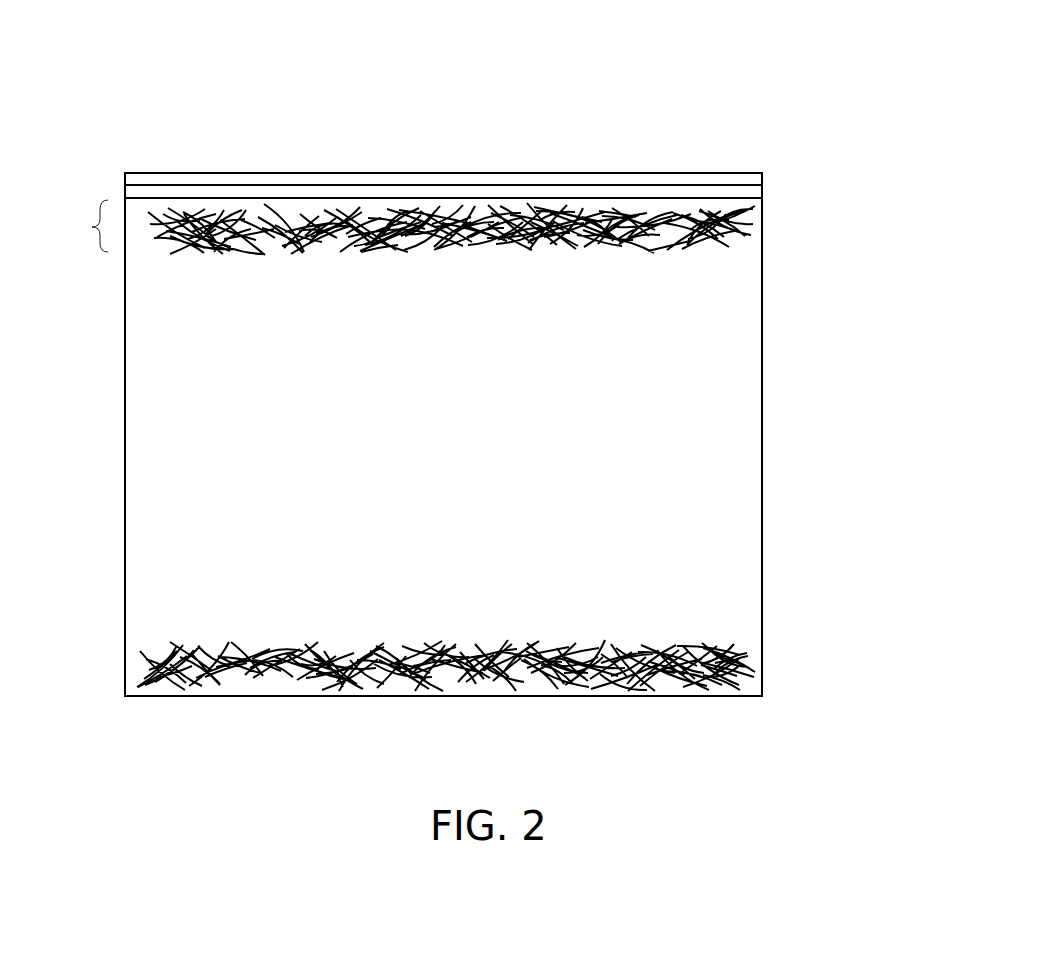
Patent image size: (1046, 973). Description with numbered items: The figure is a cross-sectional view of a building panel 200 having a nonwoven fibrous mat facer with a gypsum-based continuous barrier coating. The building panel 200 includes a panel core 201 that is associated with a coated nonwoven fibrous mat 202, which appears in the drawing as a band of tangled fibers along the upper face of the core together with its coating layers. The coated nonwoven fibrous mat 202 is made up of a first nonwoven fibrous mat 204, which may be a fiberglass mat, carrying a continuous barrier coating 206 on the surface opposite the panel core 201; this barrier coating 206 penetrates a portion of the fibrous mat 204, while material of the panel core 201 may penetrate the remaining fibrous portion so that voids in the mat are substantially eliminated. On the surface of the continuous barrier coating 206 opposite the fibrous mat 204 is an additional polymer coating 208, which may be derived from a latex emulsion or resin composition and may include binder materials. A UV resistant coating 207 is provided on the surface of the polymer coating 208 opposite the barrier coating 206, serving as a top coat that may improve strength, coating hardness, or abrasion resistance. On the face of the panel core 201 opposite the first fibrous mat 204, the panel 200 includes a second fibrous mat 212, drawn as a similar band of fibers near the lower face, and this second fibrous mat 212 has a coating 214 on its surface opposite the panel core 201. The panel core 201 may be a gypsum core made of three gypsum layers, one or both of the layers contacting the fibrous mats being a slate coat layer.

The building panel 200 is at (489, 116).
The panel core 201 is at (742, 466).
The coated nonwoven fibrous mat 202 is at (75, 226).
The nonwoven fibrous mat 204 is at (755, 237).
The continuous barrier coating 206 is at (682, 200).
The UV resistant coating 207 is at (603, 180).
The polymer coating 208 is at (502, 197).
The second fibrous mat 212 is at (747, 665).
The coating 214 is at (710, 697).